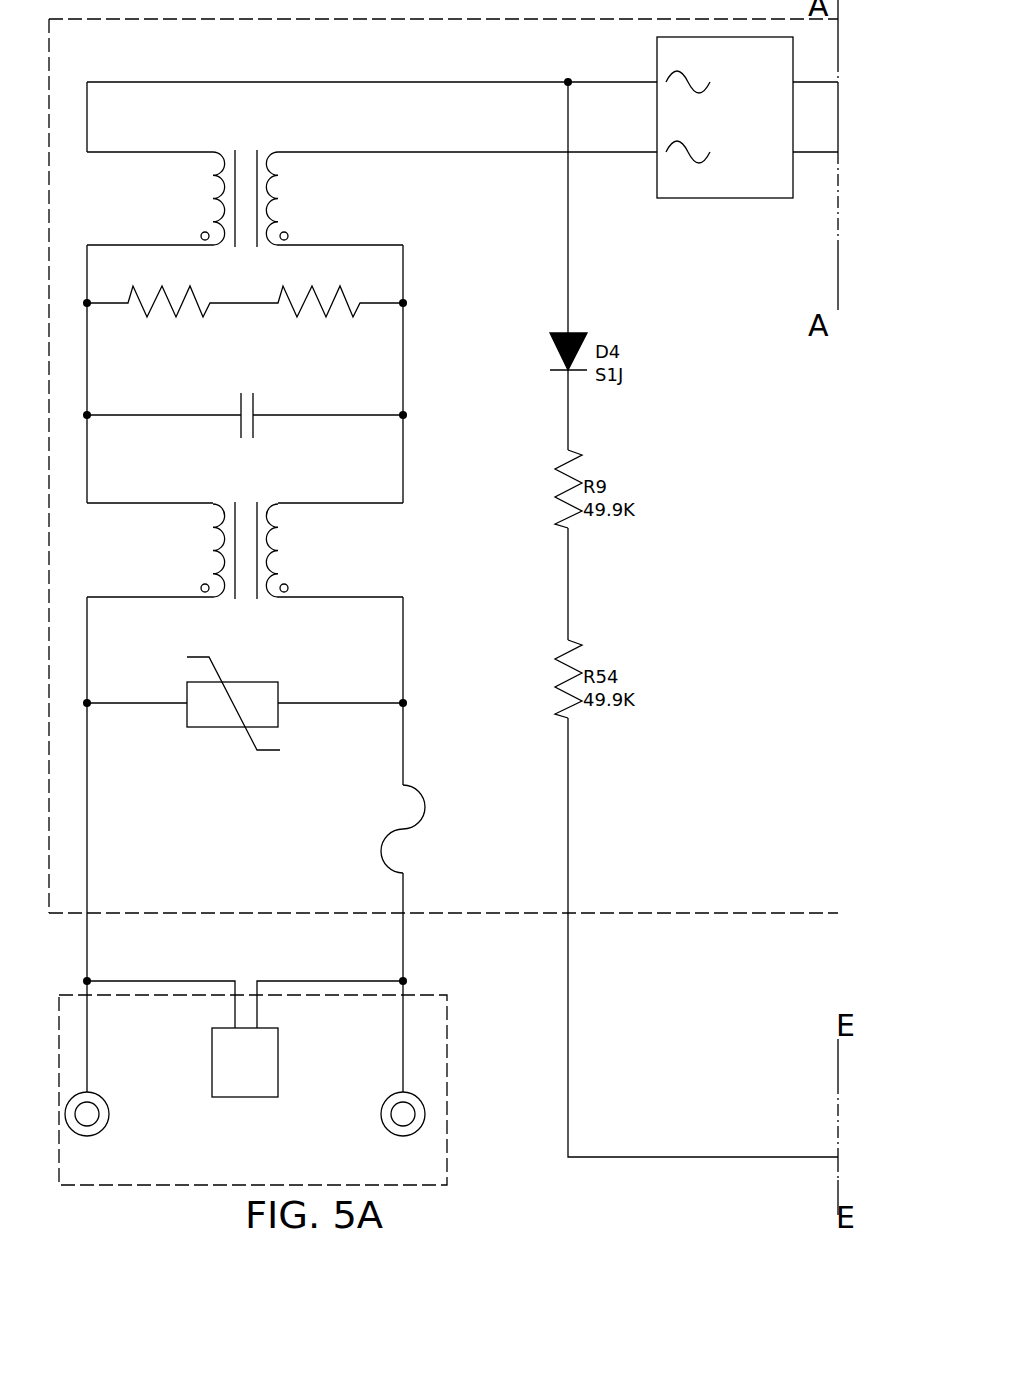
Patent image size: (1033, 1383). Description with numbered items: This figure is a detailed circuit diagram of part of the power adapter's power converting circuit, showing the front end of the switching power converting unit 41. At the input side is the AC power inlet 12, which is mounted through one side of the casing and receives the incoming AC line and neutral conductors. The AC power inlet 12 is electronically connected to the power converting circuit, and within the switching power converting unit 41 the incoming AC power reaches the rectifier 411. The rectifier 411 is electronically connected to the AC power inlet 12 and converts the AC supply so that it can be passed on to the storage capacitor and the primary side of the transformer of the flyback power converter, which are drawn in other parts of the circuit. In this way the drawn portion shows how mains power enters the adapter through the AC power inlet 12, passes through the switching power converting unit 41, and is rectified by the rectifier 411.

The switching power converting unit 41 is at (423, 28).
The rectifier 411 is at (727, 190).
The AC power inlet 12 is at (445, 1015).